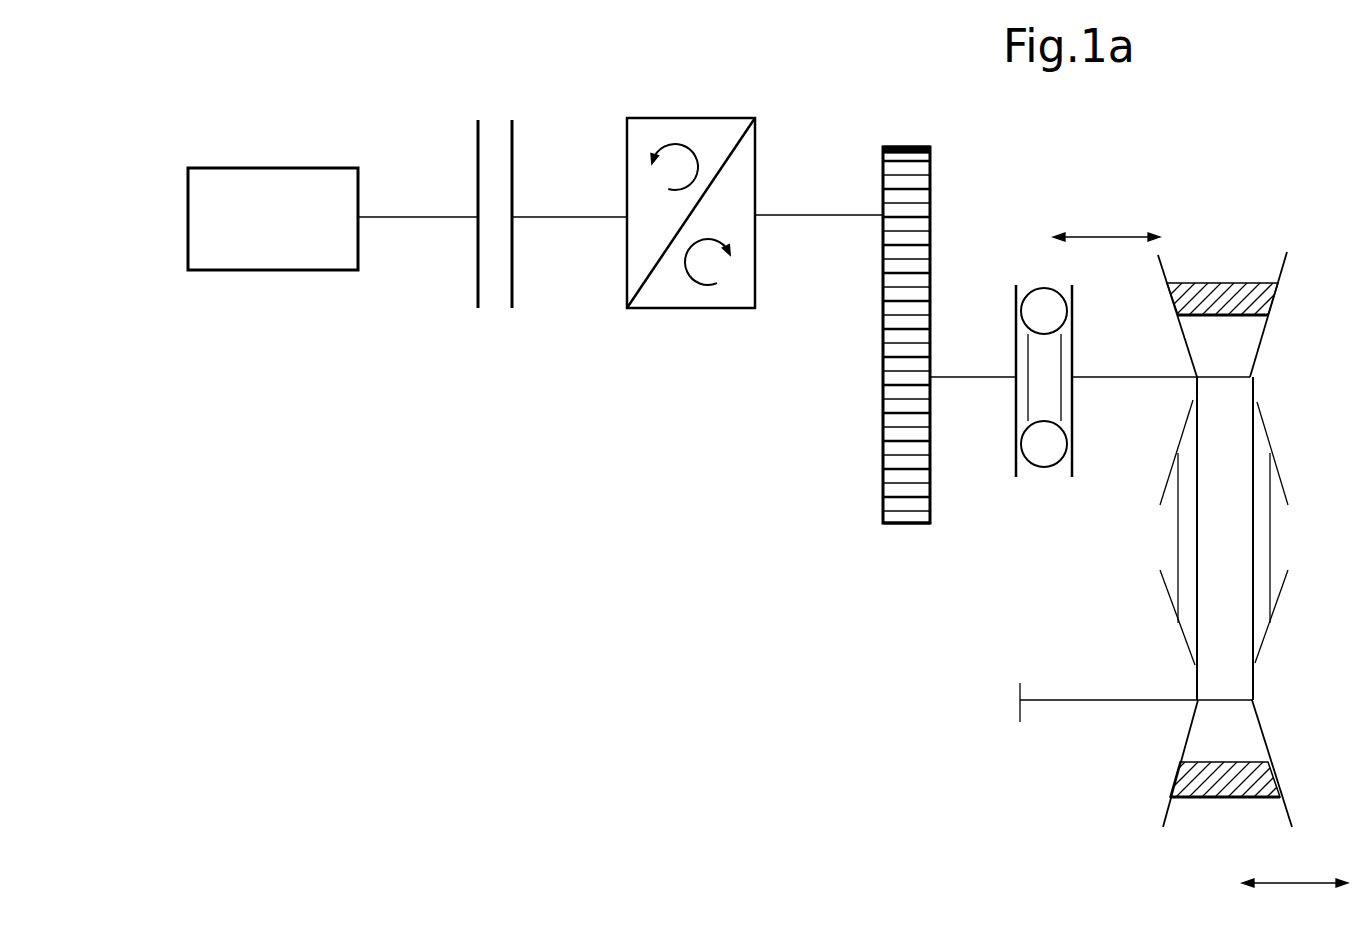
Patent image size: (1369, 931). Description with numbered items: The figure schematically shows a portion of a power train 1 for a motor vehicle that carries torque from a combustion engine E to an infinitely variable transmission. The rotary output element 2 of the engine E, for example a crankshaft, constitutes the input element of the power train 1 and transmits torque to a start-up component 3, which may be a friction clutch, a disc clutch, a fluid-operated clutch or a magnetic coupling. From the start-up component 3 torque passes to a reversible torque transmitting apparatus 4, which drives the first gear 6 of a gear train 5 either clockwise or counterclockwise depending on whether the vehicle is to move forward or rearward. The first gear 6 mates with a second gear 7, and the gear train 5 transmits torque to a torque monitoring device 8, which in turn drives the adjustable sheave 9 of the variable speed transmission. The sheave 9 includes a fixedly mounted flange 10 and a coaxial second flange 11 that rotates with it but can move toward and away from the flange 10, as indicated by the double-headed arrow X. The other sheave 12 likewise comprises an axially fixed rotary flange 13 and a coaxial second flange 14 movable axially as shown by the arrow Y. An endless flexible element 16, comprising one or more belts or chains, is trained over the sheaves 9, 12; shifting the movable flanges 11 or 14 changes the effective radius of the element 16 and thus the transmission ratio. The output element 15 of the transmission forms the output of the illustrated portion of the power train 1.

The power train 1 is at (590, 664).
The combustion engine E is at (273, 248).
The rotary output element 2 is at (404, 278).
The start-up component 3 is at (478, 268).
The reversible torque transmitting apparatus 4 is at (660, 308).
The gear train 5 is at (905, 278).
The first gear 6 is at (892, 200).
The second gear 7 is at (890, 435).
The torque monitoring device 8 is at (1040, 300).
The adjustable sheave 9 is at (1242, 285).
The fixedly mounted flange 10 is at (1287, 252).
The second flange 11 is at (1158, 257).
The adjustable sheave 12 is at (1226, 744).
The axially fixed rotary flange 13 is at (1167, 810).
The second flange 14 is at (1288, 810).
The output element 15 is at (1020, 702).
The endless flexible element 16 is at (1237, 537).
The double-headed arrow X is at (1106, 205).
The arrow Y is at (1290, 861).